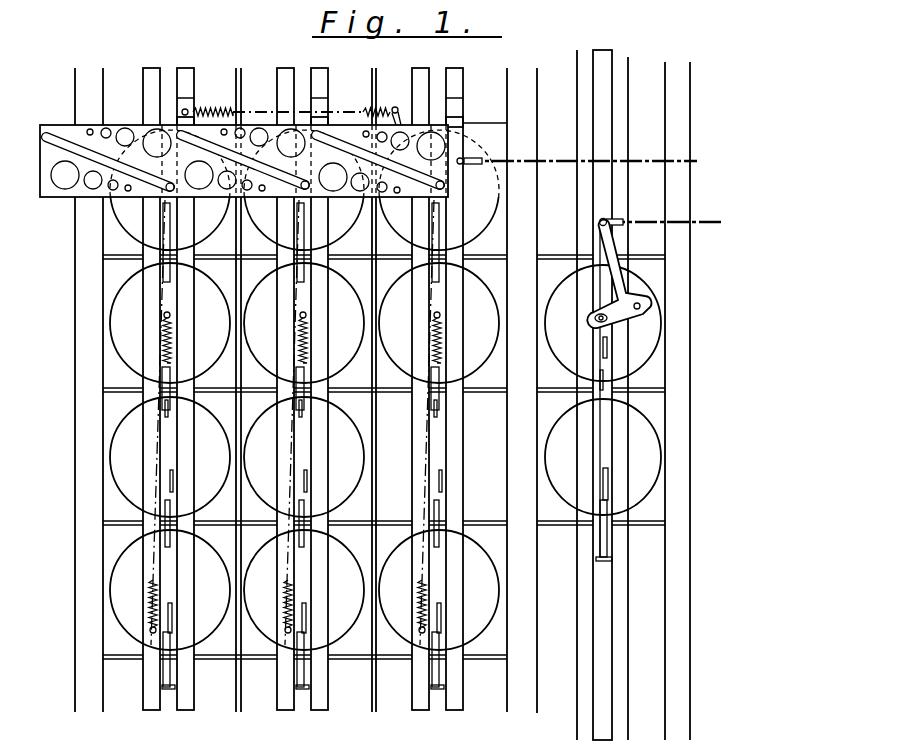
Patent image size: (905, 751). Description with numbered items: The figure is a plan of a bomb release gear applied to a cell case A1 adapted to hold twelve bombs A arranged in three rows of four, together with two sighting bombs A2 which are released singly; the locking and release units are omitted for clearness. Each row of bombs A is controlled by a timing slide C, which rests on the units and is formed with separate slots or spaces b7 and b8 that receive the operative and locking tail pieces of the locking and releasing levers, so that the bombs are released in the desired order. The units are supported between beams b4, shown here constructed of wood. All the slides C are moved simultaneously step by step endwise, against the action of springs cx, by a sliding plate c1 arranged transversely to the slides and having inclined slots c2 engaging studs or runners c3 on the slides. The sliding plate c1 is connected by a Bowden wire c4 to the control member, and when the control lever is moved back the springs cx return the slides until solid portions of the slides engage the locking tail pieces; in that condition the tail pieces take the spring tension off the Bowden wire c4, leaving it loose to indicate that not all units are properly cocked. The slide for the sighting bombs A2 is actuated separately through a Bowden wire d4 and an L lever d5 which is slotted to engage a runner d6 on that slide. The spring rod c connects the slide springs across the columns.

The sliding plate c1 is at (65, 128).
The inclined slots c2 is at (407, 173).
The studs or runners c3 is at (447, 184).
The spring rod c is at (291, 108).
The springs cx is at (163, 330).
The Bowden wire c4 is at (677, 161).
The Bowden wire d4 is at (690, 222).
The L lever d5 is at (612, 248).
The runner d6 is at (593, 318).
The beams b4 is at (320, 450).
The slot or space b7 is at (613, 480).
The slot or space b8 is at (602, 540).
The bombs A is at (304, 456).
The cell case A1 is at (237, 325).
The sighting bombs A2 is at (603, 390).
The timing slides C is at (603, 450).